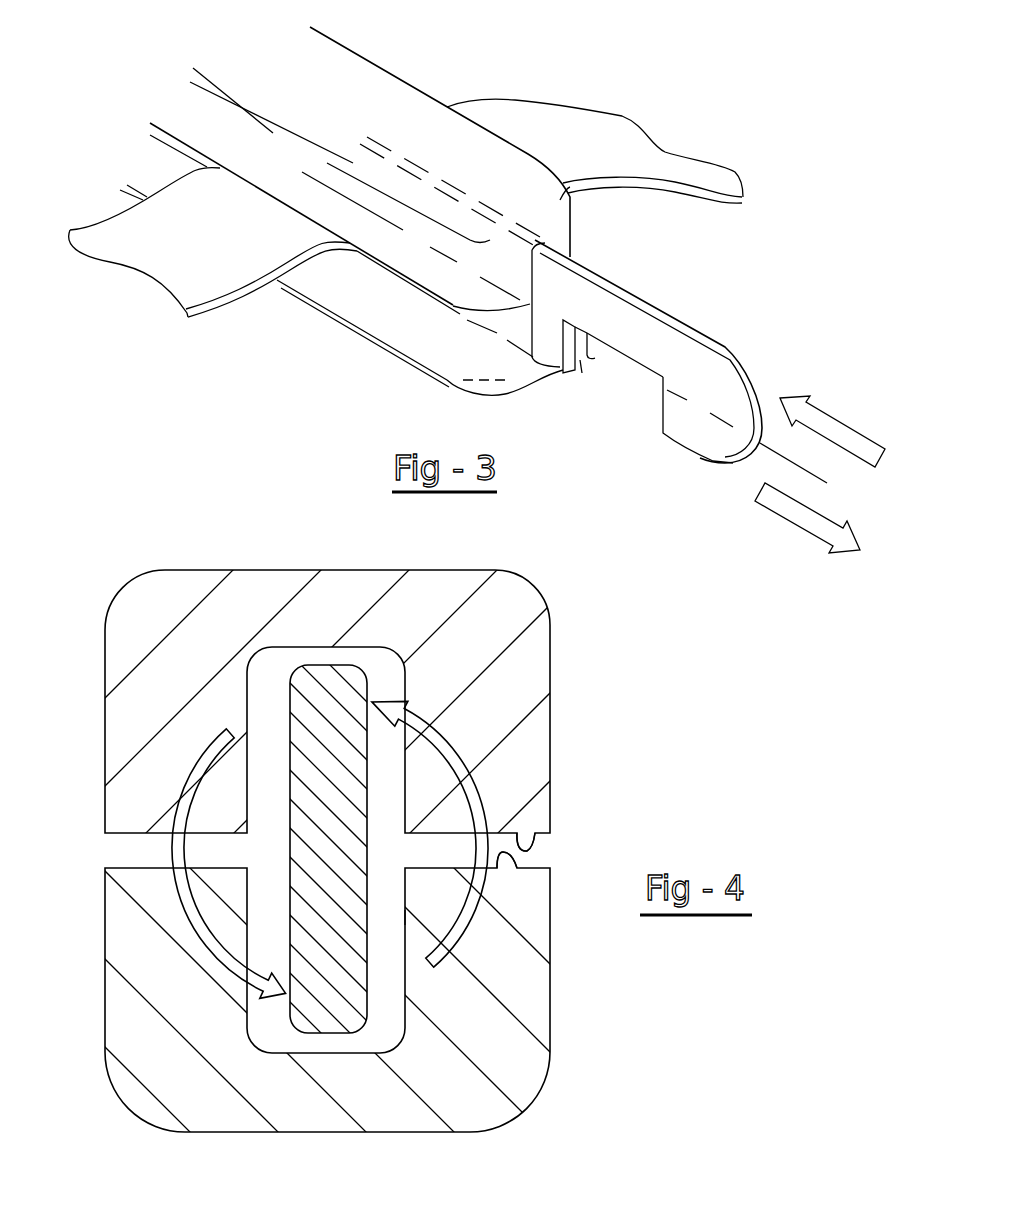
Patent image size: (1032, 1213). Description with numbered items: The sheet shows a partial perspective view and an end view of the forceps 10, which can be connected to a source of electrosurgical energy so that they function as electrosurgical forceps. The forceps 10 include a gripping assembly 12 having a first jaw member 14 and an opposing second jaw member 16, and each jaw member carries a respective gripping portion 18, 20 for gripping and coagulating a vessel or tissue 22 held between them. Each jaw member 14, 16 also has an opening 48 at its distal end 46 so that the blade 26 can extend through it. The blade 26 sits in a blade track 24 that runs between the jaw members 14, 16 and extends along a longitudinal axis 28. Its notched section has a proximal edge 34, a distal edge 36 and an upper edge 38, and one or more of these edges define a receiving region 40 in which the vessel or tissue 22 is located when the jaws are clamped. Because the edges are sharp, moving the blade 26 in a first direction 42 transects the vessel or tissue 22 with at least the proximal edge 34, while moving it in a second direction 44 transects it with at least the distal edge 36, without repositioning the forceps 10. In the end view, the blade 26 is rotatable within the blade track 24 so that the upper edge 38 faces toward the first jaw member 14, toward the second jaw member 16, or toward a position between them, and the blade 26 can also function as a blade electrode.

In FIG. 3, the forceps 10 is at (354, 36).
In FIG. 4, the forceps 10 is at (190, 559).
In FIG. 4, the gripping assembly 12 is at (565, 930).
In FIG. 3, the first jaw member 14 is at (465, 158).
In FIG. 4, the first jaw member 14 is at (537, 670).
In FIG. 3, the second jaw member 16 is at (400, 327).
In FIG. 4, the second jaw member 16 is at (513, 1047).
In FIG. 4, the gripping portion 18 is at (517, 840).
In FIG. 4, the gripping portion 20 is at (496, 868).
In FIG. 3, the vessel or tissue 22 is at (600, 143).
In FIG. 4, the blade track 24 is at (250, 720).
In FIG. 3, the blade 26 is at (716, 320).
In FIG. 4, the blade 26 is at (278, 845).
In FIG. 3, the longitudinal axis 28 is at (350, 200).
In FIG. 3, the proximal edge 34 is at (582, 373).
In FIG. 3, the distal edge 36 is at (660, 413).
In FIG. 3, the upper edge 38 is at (590, 356).
In FIG. 3, the receiving region 40 is at (604, 402).
In FIG. 3, the first direction 42 is at (843, 430).
In FIG. 3, the second direction 44 is at (800, 527).
In FIG. 3, the distal end 46 is at (560, 232).
In FIG. 4, the opening 48 is at (405, 917).